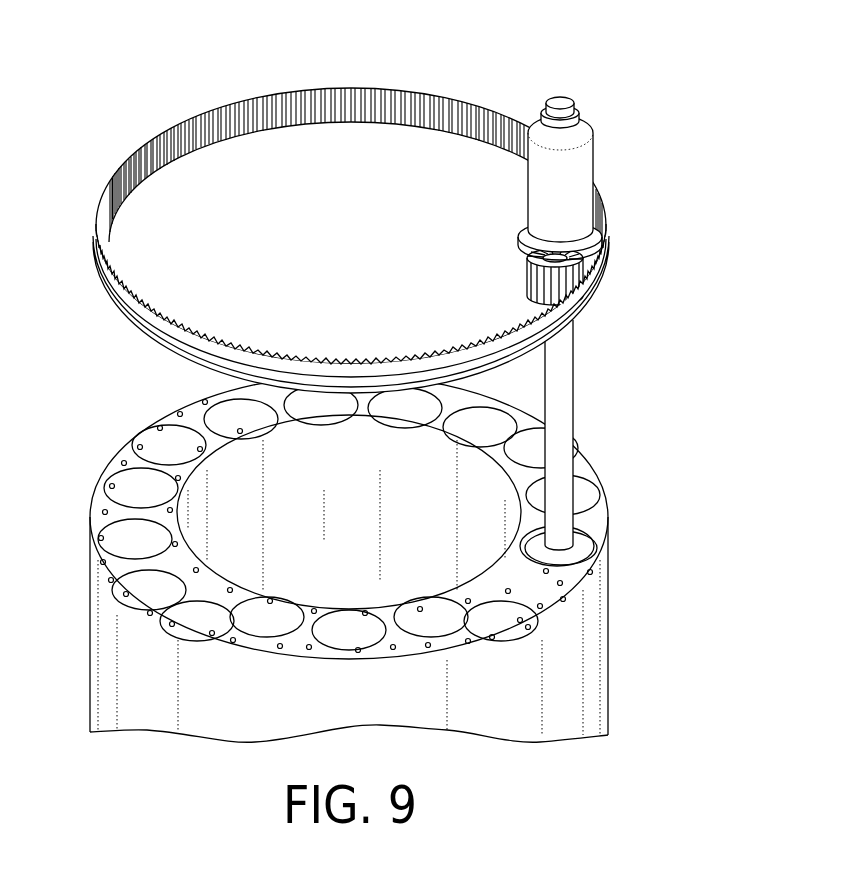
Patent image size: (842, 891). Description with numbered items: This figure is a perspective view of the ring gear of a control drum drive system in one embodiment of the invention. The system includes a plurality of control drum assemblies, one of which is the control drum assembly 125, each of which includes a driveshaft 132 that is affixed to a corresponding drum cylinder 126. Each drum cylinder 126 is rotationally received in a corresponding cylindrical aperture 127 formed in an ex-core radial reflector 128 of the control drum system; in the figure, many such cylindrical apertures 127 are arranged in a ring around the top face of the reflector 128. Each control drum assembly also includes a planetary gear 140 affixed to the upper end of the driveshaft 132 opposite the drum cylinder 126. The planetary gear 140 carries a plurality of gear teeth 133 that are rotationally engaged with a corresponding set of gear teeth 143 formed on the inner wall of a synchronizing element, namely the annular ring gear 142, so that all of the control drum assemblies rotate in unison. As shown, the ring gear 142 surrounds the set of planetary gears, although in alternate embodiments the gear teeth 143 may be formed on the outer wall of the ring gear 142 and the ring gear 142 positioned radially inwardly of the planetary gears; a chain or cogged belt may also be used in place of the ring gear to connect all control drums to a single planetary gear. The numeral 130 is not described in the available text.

The control drum assembly 125 is at (616, 336).
The drum cylinder 126 is at (580, 553).
The cylindrical aperture 127 is at (165, 440).
The ex-core radial reflector 128 is at (612, 603).
The motor 130 is at (578, 169).
The driveshaft 132 is at (578, 391).
The gear teeth 133 is at (532, 292).
The planetary gear 140 is at (514, 262).
The annular ring gear 142 is at (351, 195).
The gear teeth 143 is at (146, 174).